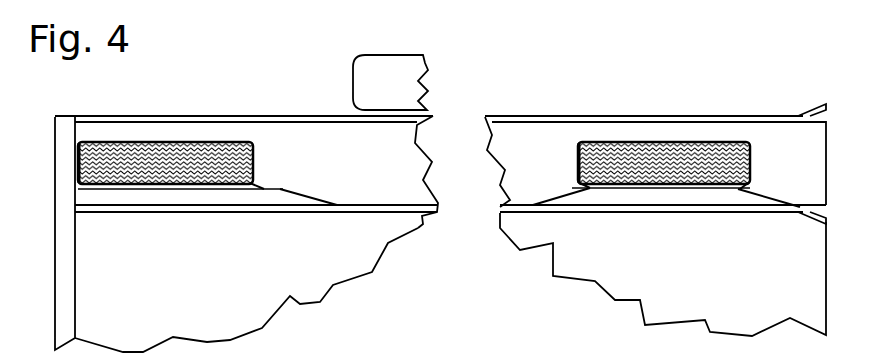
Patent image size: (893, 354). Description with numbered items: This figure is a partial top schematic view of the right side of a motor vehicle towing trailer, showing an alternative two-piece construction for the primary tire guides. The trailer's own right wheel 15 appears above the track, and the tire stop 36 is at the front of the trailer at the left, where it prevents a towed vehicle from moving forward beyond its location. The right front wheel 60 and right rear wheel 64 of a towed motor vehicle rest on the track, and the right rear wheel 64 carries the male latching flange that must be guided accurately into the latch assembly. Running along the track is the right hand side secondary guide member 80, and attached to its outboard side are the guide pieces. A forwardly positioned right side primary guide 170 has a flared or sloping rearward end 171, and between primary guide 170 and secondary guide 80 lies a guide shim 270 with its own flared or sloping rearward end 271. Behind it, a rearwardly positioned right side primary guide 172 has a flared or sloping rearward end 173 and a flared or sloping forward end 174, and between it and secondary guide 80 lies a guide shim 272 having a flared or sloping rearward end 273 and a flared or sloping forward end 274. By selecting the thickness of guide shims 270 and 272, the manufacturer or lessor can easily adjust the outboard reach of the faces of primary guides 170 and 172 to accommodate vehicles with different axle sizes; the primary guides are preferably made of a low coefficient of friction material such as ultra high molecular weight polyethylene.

The right wheel 15 is at (400, 61).
The tire stop 36 is at (70, 291).
The right front wheel 60 is at (151, 140).
The right rear wheel 64 is at (645, 143).
The right hand side secondary guide member 80 is at (385, 211).
The forwardly positioned right side primary guide 170 is at (215, 191).
The flared or sloping rearward end 171 is at (262, 187).
The rearwardly positioned right side primary guide 172 is at (698, 205).
The flared or sloping rearward end 173 is at (745, 190).
The flared or sloping forward end 174 is at (590, 187).
The guide shim 270 is at (280, 206).
The flared or sloping rearward end 271 is at (305, 195).
The guide shim 272 is at (640, 213).
The flared or sloping rearward end 273 is at (775, 196).
The flared or sloping forward end 274 is at (572, 190).